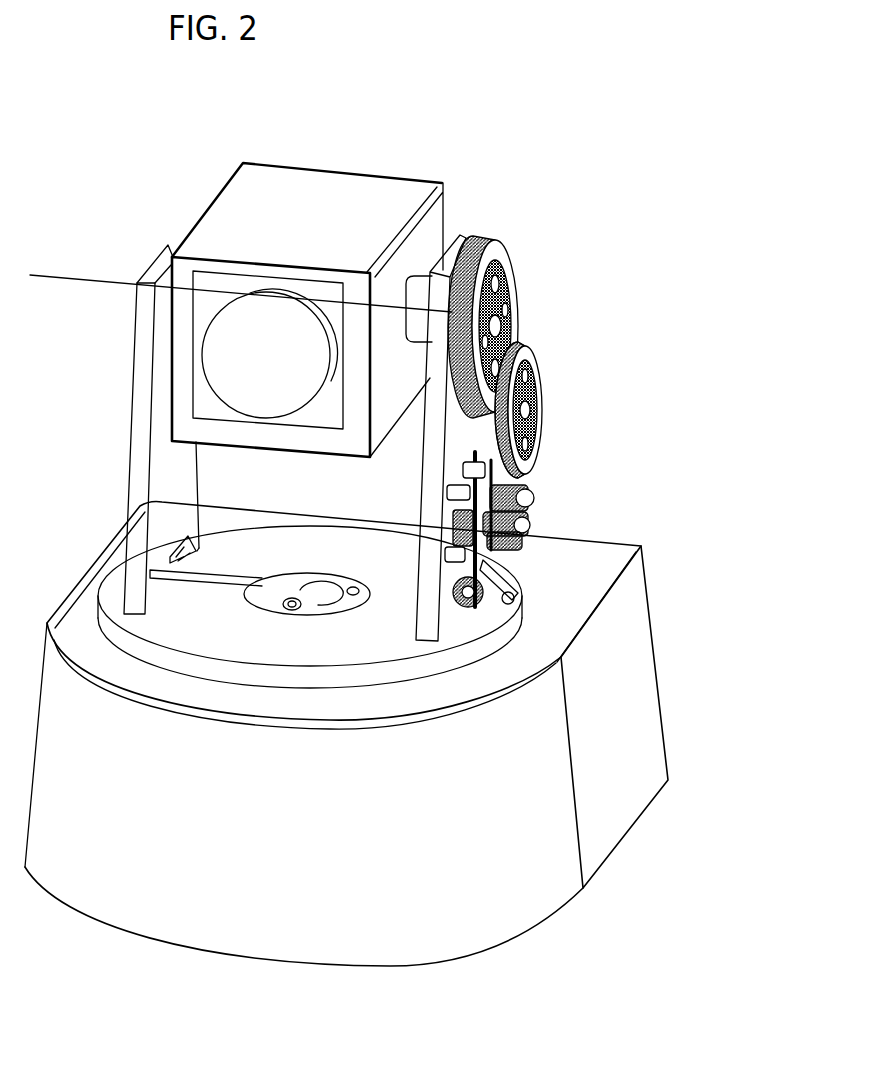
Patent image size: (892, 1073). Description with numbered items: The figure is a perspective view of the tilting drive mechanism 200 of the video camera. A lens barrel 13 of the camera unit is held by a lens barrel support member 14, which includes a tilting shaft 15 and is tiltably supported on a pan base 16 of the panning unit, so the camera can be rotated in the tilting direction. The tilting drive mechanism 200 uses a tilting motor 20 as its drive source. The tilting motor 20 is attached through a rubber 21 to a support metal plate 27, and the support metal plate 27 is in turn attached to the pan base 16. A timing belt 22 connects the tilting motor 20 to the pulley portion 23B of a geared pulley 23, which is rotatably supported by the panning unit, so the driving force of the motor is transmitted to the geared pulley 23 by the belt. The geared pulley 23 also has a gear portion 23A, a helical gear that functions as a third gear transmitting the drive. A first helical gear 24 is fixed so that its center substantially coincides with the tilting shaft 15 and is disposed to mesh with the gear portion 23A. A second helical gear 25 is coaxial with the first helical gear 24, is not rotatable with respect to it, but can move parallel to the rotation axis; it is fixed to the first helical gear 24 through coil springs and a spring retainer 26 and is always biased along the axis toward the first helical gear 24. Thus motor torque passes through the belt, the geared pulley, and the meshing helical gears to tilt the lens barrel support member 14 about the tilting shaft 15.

The lens barrel 13 is at (207, 330).
The lens barrel support member 14 is at (265, 243).
The tilting shaft 15 is at (419, 288).
The pan base 16 is at (191, 626).
The tilting motor 20 is at (644, 553).
The rubber 21 is at (601, 624).
The timing belt 22 is at (512, 491).
The geared pulley 23 is at (632, 405).
The gear portion 23A is at (537, 433).
The pulley portion 23B is at (533, 473).
The first helical gear 24 is at (603, 292).
The second helical gear 25 is at (505, 253).
The spring retainer 26 is at (515, 292).
The support metal plate 27 is at (500, 567).
The tilting drive mechanism 200 is at (646, 426).